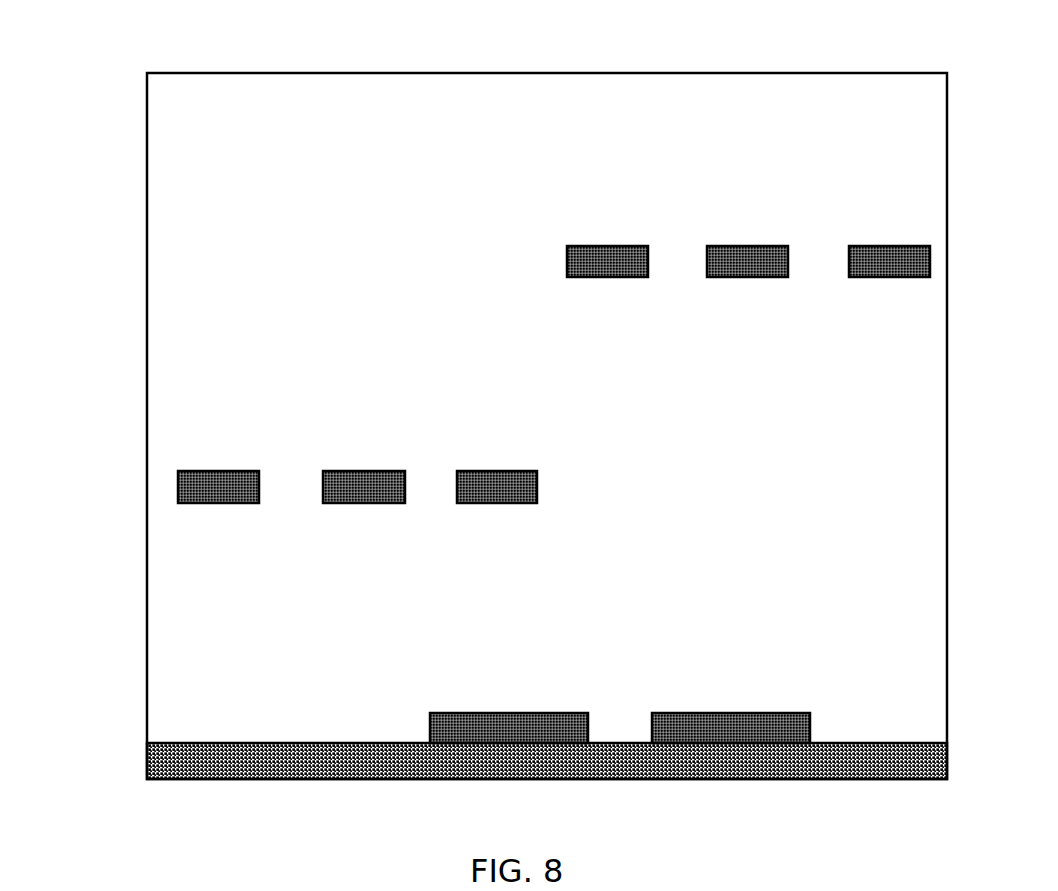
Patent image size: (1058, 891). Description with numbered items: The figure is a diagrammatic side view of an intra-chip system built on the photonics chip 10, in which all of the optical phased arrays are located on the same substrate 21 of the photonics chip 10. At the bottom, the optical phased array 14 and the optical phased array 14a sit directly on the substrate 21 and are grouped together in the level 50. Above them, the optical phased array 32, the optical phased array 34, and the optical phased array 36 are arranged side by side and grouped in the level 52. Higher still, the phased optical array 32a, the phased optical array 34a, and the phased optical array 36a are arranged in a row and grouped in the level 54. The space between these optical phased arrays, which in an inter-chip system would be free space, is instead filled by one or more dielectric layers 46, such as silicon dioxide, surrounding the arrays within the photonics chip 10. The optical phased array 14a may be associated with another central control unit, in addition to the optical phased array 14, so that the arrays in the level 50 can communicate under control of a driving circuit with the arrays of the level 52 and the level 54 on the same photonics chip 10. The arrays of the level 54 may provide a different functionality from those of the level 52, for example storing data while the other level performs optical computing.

The photonics chip 10 is at (108, 35).
The dielectric layers 46 is at (175, 541).
The substrate 21 is at (233, 755).
The level 50 is at (130, 684).
The optical phased array 14 is at (435, 731).
The optical phased array 14a is at (777, 731).
The optical phased array 32 is at (214, 485).
The optical phased array 34 is at (359, 485).
The optical phased array 36 is at (495, 485).
The level 52 is at (646, 418).
The phased optical array 32a is at (606, 258).
The phased optical array 34a is at (745, 260).
The phased optical array 36a is at (888, 260).
The level 54 is at (470, 193).